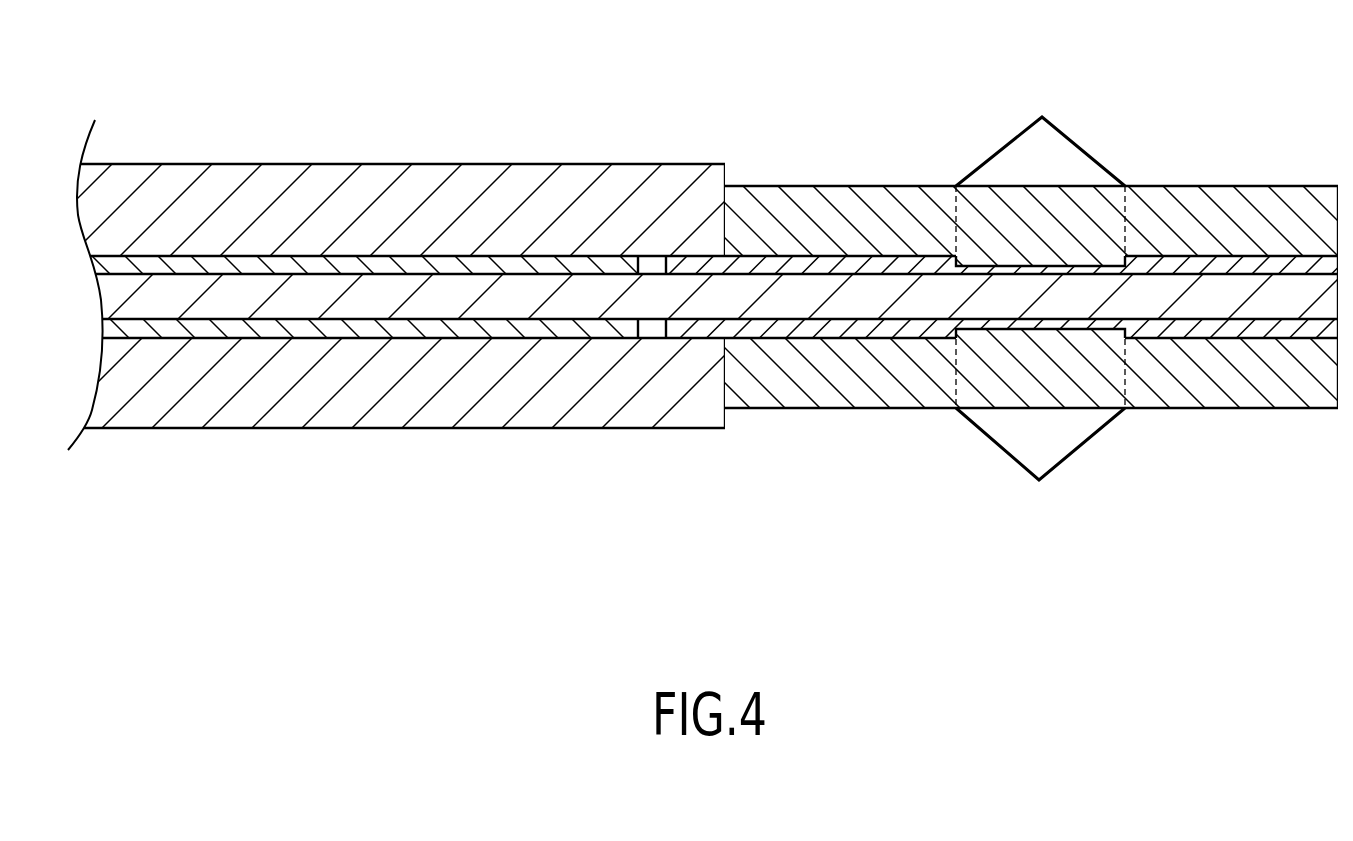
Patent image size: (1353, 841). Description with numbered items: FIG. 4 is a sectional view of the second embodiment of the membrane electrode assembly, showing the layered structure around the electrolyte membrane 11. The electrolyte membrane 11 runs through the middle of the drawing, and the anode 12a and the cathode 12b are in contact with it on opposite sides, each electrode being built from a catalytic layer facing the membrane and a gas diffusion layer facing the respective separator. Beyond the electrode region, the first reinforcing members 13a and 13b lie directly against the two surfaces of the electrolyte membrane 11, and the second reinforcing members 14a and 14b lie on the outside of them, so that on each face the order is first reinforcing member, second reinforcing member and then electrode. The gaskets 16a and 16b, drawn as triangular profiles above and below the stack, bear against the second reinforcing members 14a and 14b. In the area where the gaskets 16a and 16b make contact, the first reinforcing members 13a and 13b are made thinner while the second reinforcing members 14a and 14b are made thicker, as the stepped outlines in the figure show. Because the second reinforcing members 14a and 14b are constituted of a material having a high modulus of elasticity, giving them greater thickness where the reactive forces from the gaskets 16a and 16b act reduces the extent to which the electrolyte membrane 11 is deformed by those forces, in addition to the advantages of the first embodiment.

The electrolyte membrane 11 is at (588, 293).
The anode 12a is at (479, 453).
The cathode 12b is at (669, 144).
The first reinforcing member 13a is at (800, 333).
The first reinforcing member 13b is at (883, 265).
The second reinforcing member 14a is at (878, 385).
The second reinforcing member 14b is at (798, 203).
The gasket 16a is at (1062, 445).
The gasket 16b is at (1063, 148).